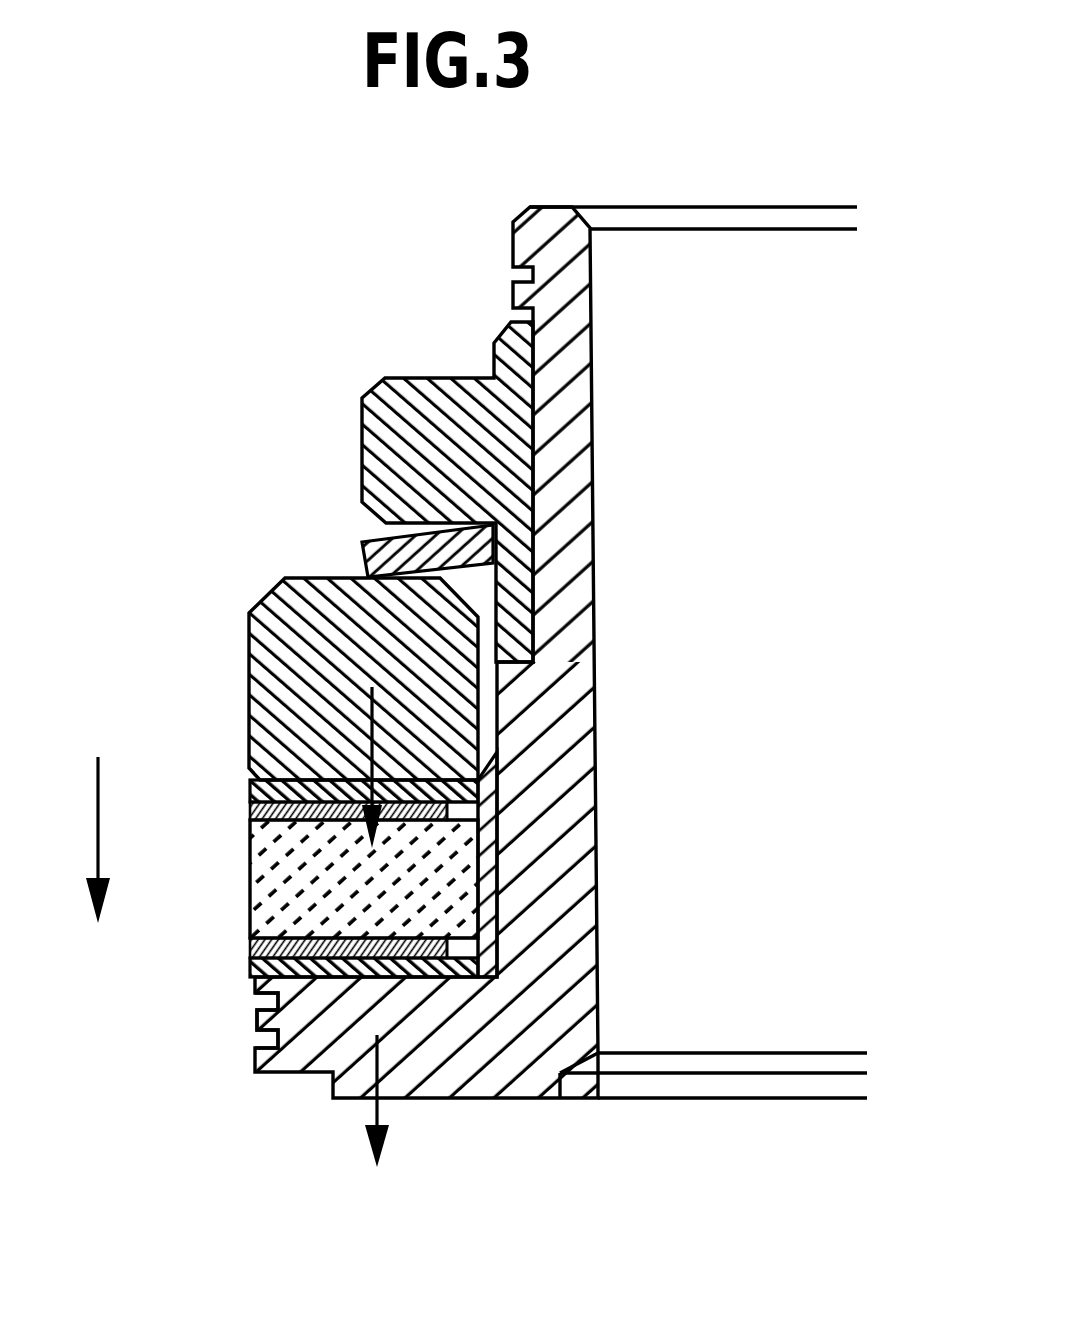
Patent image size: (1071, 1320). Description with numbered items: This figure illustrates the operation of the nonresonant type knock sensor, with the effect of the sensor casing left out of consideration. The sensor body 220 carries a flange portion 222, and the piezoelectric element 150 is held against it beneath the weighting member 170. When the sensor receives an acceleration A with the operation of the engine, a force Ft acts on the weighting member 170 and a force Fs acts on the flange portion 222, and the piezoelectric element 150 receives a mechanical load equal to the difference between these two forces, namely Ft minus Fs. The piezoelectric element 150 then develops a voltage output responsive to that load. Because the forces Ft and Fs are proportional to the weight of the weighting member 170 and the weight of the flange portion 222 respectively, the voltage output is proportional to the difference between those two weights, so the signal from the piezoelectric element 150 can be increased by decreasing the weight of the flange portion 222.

The piezoelectric element 150 is at (403, 910).
The weighting member 170 is at (270, 595).
The housing (shell body) 220 is at (558, 905).
The flange portion 222 is at (260, 1018).
The force acting on the weighting member Ft is at (367, 745).
The force acting on the flange portion Fs is at (370, 1070).
The acceleration A is at (78, 840).